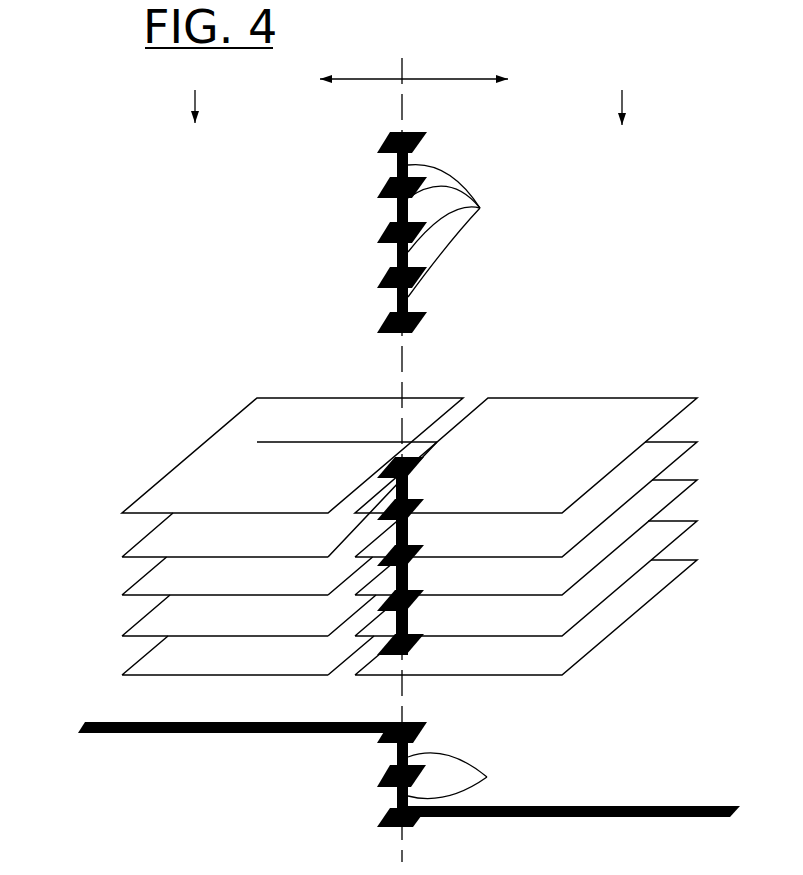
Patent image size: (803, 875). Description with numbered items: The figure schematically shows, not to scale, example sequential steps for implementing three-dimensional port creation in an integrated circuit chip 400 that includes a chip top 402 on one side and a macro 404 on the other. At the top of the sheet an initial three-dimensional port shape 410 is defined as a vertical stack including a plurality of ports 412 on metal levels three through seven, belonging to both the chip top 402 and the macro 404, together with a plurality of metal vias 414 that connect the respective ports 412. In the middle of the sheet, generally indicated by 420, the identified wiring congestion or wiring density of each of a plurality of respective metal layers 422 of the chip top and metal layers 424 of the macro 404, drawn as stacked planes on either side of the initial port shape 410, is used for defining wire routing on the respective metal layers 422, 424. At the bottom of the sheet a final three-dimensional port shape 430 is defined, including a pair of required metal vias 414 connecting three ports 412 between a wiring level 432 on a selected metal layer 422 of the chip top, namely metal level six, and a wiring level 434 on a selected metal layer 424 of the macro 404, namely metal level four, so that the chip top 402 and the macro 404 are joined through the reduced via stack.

The integrated circuit chip 400 is at (503, 55).
The chip top 402 is at (236, 95).
The macro 404 is at (578, 97).
The initial three-dimensional port shape 410 is at (468, 148).
The ports 412 is at (389, 495).
The metal vias 414 is at (466, 482).
The wire routing definition step 420 is at (592, 348).
The metal layers of the chip top 422 is at (207, 437).
The metal layers of the macro 424 is at (620, 399).
The final three-dimensional port shape 430 is at (409, 761).
The wiring level on the chip top 432 is at (220, 722).
The wiring level on the macro 434 is at (527, 807).